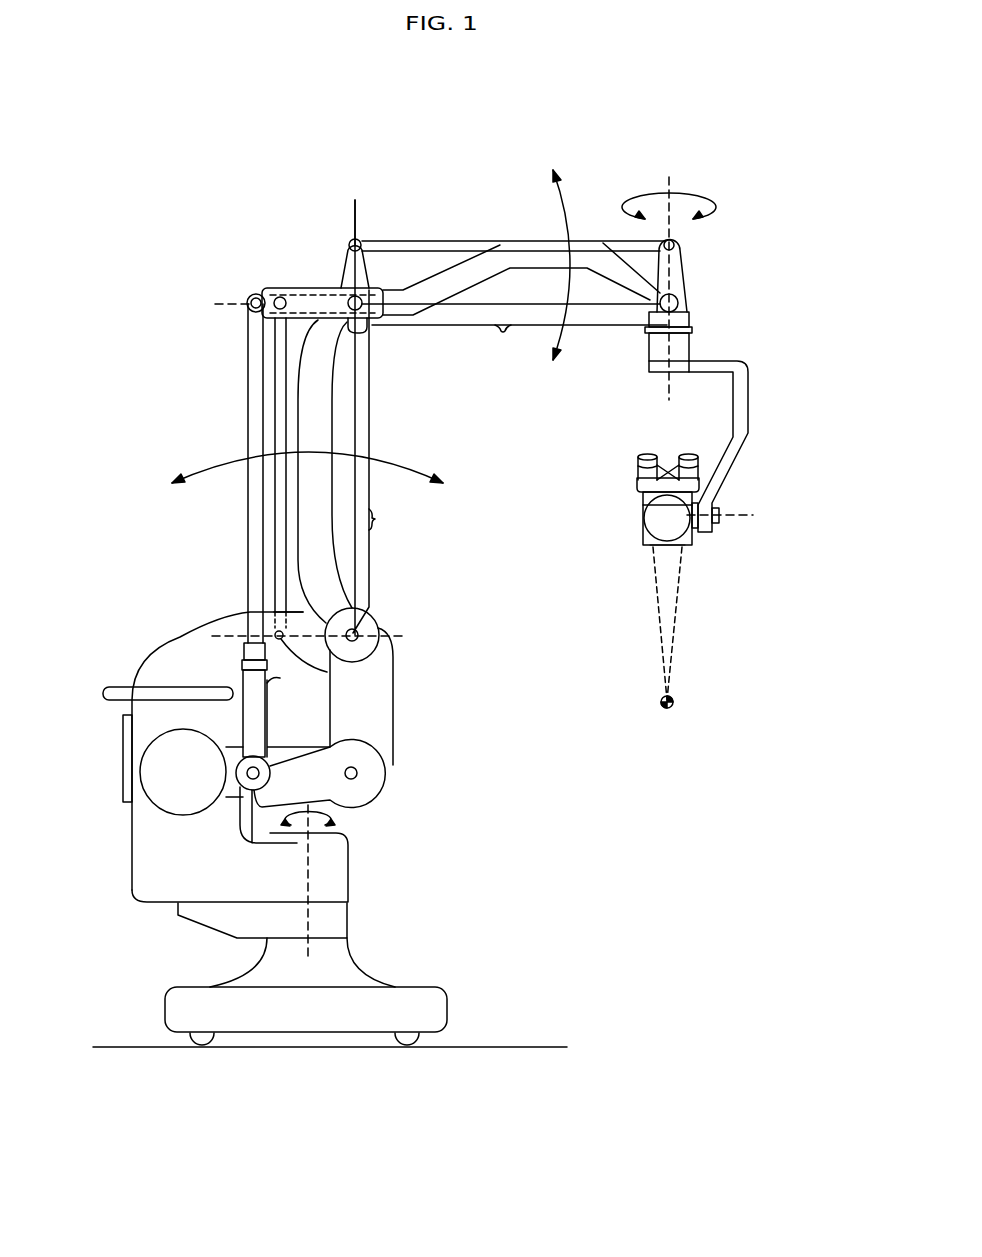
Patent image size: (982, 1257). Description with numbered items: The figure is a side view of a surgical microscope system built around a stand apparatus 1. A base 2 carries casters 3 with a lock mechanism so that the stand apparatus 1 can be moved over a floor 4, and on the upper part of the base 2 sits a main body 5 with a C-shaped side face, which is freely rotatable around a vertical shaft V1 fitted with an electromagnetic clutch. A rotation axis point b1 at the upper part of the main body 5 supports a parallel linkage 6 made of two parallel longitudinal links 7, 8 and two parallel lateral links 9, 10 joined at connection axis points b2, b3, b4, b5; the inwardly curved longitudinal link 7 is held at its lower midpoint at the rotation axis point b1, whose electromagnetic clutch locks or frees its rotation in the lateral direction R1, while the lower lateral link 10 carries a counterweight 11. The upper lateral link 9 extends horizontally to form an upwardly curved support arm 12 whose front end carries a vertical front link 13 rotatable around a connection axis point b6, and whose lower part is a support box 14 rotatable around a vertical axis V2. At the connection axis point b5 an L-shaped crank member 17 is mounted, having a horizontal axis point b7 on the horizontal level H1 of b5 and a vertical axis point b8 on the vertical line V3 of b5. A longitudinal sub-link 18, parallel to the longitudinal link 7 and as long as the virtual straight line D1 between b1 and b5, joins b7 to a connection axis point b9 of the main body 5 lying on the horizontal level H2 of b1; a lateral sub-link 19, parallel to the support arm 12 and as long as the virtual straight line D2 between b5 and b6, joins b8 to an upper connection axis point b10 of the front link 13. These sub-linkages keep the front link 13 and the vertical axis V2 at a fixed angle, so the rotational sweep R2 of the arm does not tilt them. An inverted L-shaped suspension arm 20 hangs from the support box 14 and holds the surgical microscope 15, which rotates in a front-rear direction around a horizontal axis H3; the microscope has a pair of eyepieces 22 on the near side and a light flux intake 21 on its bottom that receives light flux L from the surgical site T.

The stand apparatus 1 is at (445, 552).
The base 2 is at (412, 987).
The casters 3 is at (407, 1047).
The floor 4 is at (490, 1047).
The main body 5 is at (162, 653).
The parallel linkage 6 is at (163, 511).
The longitudinal link 7 is at (295, 488).
The longitudinal link 8 is at (248, 390).
The upper lateral link 9 is at (300, 320).
The lower lateral link 10 is at (283, 747).
The counterweight 11 is at (163, 813).
The support arm 12 is at (472, 268).
The front link 13 is at (688, 273).
The support box 14 is at (647, 347).
The surgical microscope 15 is at (643, 517).
The crank member 17 is at (342, 260).
The longitudinal sub-link 18 is at (272, 560).
The lateral sub-link 19 is at (425, 240).
The suspension arm 20 is at (748, 400).
The light flux intake 21 is at (670, 548).
The eyepieces 22 is at (690, 438).
The rotation axis point b1 is at (390, 613).
The connection axis point b2 is at (252, 296).
The connection axis point b3 is at (238, 793).
The connection axis point b4 is at (357, 777).
The connection axis point b5 is at (372, 328).
The connection axis point b6 is at (685, 303).
The horizontal axis point b7 is at (277, 297).
The vertical axis point b8 is at (360, 237).
The connection axis point b9 is at (268, 683).
The upper connection axis point b10 is at (680, 242).
The horizontal level H1 is at (216, 306).
The horizontal level H2 is at (325, 638).
The horizontal axis H3 is at (735, 518).
The vertical shaft V1 is at (308, 893).
The vertical axis V2 is at (669, 274).
The vertical line V3 is at (352, 213).
The virtual straight line D1 is at (379, 417).
The virtual straight line D2 is at (503, 346).
The lateral direction R1 is at (398, 466).
The rotation direction R2 is at (565, 205).
The light flux L is at (658, 598).
The surgical site T is at (675, 707).